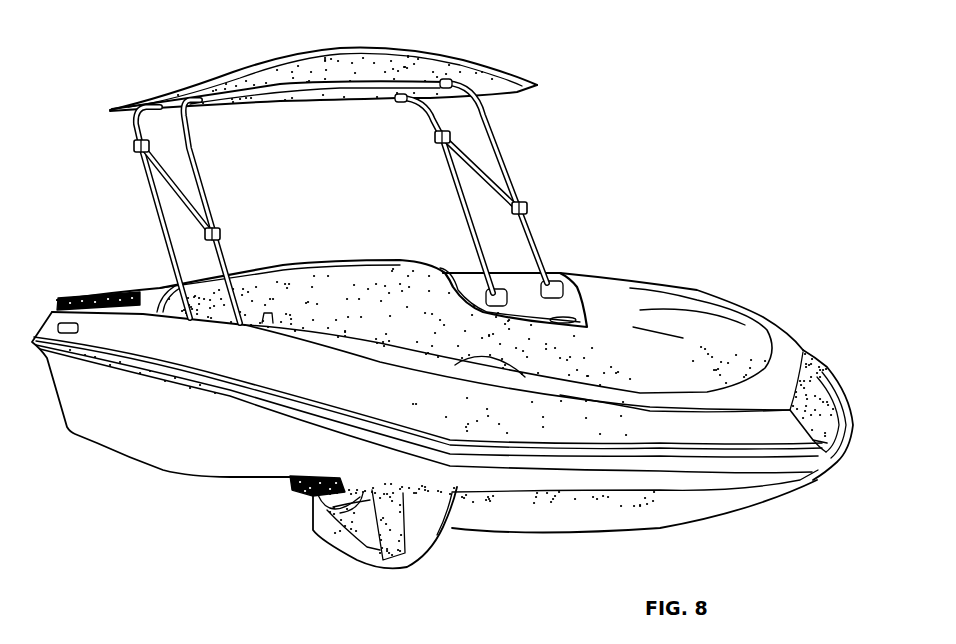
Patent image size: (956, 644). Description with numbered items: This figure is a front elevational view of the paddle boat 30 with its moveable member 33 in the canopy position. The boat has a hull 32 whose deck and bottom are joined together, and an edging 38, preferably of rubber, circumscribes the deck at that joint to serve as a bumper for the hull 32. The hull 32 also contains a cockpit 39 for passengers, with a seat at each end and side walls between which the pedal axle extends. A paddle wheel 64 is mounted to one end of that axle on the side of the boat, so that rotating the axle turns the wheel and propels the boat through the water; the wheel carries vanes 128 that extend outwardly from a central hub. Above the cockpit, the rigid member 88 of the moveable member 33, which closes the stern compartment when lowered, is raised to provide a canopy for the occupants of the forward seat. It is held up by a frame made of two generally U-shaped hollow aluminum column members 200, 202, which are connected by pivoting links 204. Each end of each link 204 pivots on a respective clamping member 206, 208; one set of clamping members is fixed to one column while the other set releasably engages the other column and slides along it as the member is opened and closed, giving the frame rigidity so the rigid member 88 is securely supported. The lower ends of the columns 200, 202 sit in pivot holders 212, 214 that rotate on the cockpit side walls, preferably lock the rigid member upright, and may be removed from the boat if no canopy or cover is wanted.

The paddle boat 30 is at (786, 258).
The hull 32 is at (798, 332).
The moveable member 33 is at (513, 33).
The edging 38 is at (840, 456).
The cockpit 39 is at (682, 323).
The paddle wheel 64 is at (432, 534).
The rigid member 88 is at (531, 80).
The vanes 128 is at (317, 519).
The column member 200 is at (167, 230).
The column member 202 is at (200, 157).
The pivoting links 204 is at (181, 197).
The clamping member 206 is at (222, 236).
The clamping member 208 is at (134, 148).
The pivot holder 212 is at (489, 297).
The pivot holder 214 is at (552, 285).